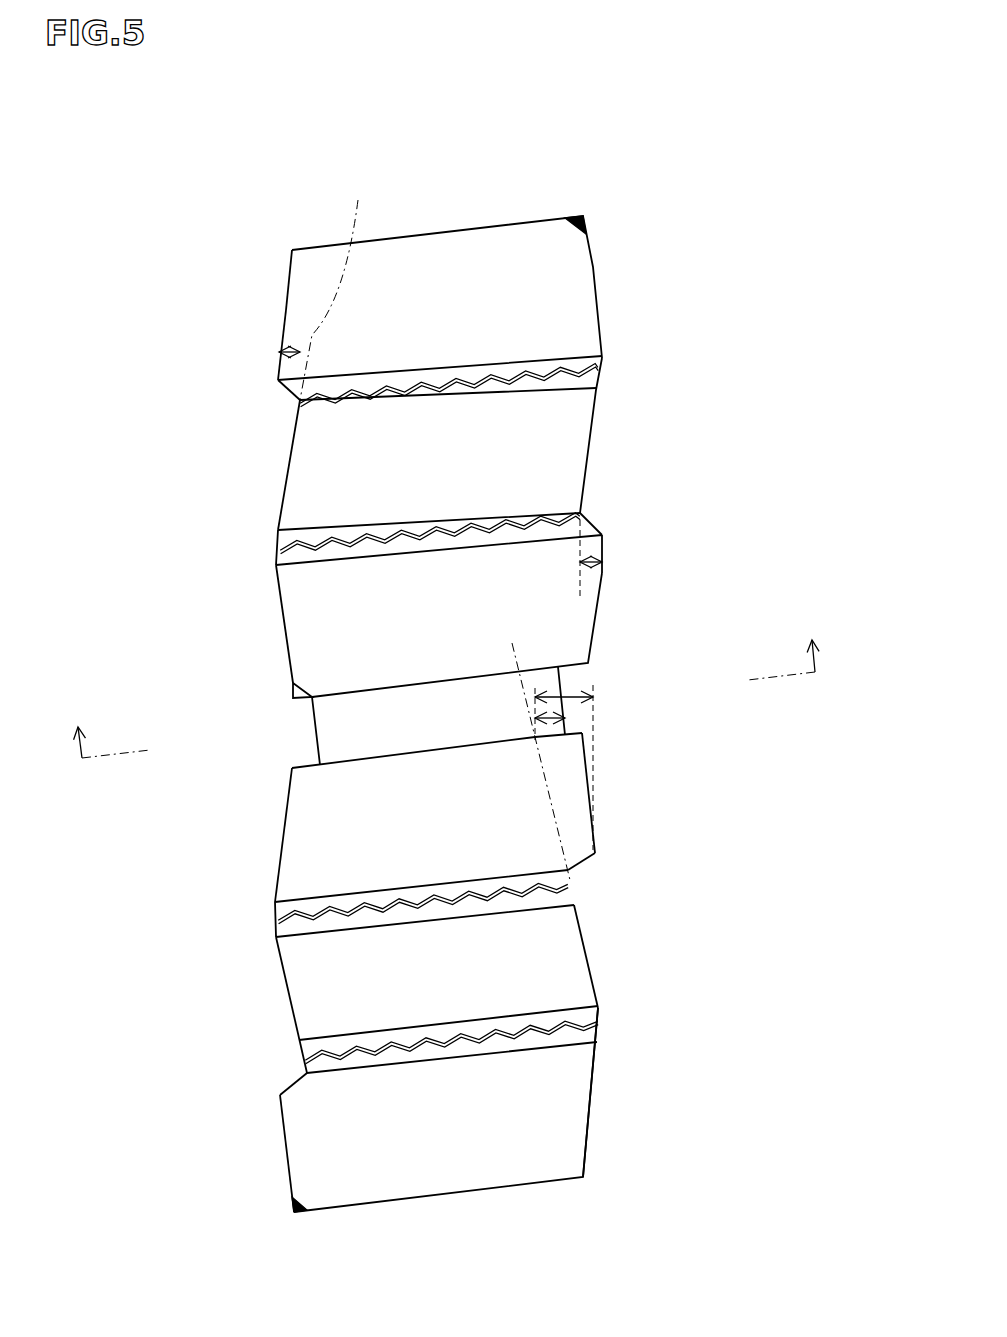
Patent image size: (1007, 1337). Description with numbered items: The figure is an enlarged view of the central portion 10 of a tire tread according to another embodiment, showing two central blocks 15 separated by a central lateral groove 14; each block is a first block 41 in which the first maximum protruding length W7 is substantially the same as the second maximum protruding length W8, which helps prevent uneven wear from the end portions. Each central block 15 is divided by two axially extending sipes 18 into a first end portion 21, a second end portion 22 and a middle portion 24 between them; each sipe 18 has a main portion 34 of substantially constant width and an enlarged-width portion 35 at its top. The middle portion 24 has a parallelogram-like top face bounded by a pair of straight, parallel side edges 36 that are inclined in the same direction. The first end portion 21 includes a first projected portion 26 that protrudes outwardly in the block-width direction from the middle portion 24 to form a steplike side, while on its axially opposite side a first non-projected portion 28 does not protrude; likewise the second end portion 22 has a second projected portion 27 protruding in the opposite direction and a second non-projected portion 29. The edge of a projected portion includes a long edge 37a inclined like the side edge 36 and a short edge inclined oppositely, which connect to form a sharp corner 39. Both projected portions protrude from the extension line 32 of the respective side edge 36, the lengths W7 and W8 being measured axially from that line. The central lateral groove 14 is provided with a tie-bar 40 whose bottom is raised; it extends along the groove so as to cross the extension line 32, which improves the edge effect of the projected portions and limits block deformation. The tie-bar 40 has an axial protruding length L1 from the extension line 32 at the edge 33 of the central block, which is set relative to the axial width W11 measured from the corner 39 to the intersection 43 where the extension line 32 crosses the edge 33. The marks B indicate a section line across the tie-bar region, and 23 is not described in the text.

The central portion 10 is at (488, 118).
The central lateral groove 14 is at (405, 720).
The central block 15 is at (500, 213).
The first block 41 is at (140, 1068).
The sipe 18 is at (445, 382).
The first end portion 21 is at (487, 313).
The second end portion 22 is at (488, 598).
The first joint band 23 is at (606, 358).
The middle portion 24 is at (487, 457).
The first projected portion 26 is at (283, 290).
The second projected portion 27 is at (601, 603).
The first non-projected portion 28 is at (593, 265).
The second non-projected portion 29 is at (279, 607).
The extension line 32 is at (707, 648).
The edge 33 is at (365, 757).
The main portion 34 is at (309, 537).
The enlarged-width portion 35 is at (314, 555).
The side edge 36 is at (286, 458).
The long edge 37a is at (287, 268).
The sharp corner 39 is at (279, 380).
The tie-bar 40 is at (367, 706).
The intersection 43 is at (536, 739).
The first maximum protruding length W7 is at (276, 350).
The second maximum protruding length W8 is at (605, 562).
The axial width W11 is at (600, 690).
The axial protruding length L1 is at (567, 718).
The section line B- B is at (445, 683).